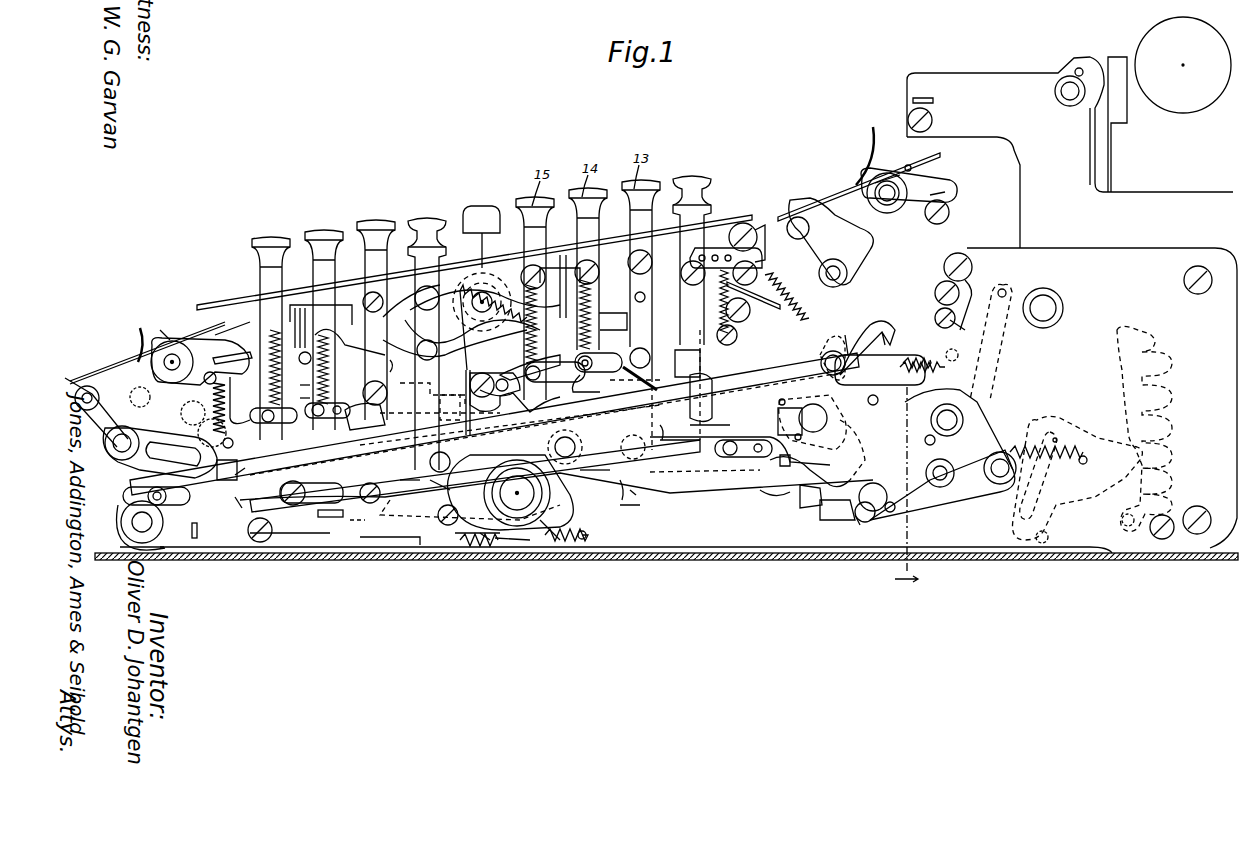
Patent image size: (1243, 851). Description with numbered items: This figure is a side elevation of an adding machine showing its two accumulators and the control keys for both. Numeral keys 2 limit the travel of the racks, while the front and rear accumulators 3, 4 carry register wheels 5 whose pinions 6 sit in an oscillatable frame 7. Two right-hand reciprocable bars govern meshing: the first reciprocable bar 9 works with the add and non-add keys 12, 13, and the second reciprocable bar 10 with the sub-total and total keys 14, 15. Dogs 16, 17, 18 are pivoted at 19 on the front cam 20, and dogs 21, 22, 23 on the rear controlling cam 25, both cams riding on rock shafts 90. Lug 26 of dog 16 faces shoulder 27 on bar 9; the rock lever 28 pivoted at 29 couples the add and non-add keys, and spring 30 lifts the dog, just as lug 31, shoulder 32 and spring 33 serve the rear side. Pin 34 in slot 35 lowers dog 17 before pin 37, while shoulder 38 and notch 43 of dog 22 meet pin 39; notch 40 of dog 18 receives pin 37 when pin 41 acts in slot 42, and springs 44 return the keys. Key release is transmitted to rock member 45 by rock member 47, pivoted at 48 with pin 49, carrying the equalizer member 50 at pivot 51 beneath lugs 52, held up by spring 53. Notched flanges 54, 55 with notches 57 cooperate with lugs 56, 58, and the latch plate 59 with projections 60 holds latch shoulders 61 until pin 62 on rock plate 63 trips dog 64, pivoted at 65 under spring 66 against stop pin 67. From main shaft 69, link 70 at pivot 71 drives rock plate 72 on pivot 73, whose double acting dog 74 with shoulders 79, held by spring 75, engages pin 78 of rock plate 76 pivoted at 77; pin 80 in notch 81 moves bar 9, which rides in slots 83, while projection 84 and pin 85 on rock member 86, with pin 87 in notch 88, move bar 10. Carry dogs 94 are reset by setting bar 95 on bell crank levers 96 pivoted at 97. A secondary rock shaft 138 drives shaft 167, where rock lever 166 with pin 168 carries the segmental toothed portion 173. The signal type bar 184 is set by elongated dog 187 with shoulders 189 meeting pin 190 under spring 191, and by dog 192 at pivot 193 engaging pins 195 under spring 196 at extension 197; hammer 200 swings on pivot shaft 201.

The numeral keys 2 is at (426, 222).
The accumulator 3 is at (110, 358).
The accumulator 4 is at (818, 195).
The register wheels 5 is at (868, 168).
The register wheel pinions 6 is at (906, 490).
The frame 7 is at (82, 395).
The first reciprocable bar 9 is at (766, 419).
The second reciprocable bar 10 is at (718, 472).
The add key 12 is at (430, 250).
The non-add key 13 is at (374, 229).
The sub-total key 14 is at (320, 239).
The total key 15 is at (268, 246).
The dog 16 is at (365, 416).
The dog 17 is at (327, 407).
The dog 18 is at (260, 464).
The pivot 19 is at (182, 532).
The cam 20 is at (122, 488).
The dog 21 is at (688, 378).
The dog 22 is at (733, 352).
The dog 23 is at (520, 401).
The controlling cam 25 is at (973, 303).
The lug 26 is at (228, 498).
The shoulder 27 is at (233, 505).
The rock lever 28 is at (437, 492).
The pivot 29 is at (411, 486).
The spring 30 is at (181, 415).
The lug 31 is at (735, 446).
The shoulder 32 is at (715, 426).
The spring 33 is at (723, 257).
The pin 34 is at (299, 383).
The slot 35 is at (387, 400).
The pin 37 is at (363, 525).
The shoulder 38 is at (670, 430).
The pin 39 is at (636, 488).
The notch 40 is at (430, 465).
The pin 41 is at (263, 400).
The slot 42 is at (299, 393).
The notch 43 is at (641, 496).
The springs 44 is at (262, 340).
The rock member 45 is at (396, 369).
The rock member 47 is at (365, 345).
The pivot 48 is at (486, 292).
The pin 49 is at (360, 352).
The equalizer member 50 is at (410, 285).
The pivot 51 is at (435, 290).
The lugs 52 is at (302, 300).
The spring 53 is at (525, 362).
The notched flange 54 is at (330, 518).
The notched flange 55 is at (598, 472).
The lugs 56 is at (382, 497).
The notches 57 is at (472, 515).
The lugs 58 is at (680, 441).
The latch plate 59 is at (272, 532).
The latching projections 60 is at (530, 426).
The latch shoulders 61 is at (474, 461).
The pin 62 is at (478, 518).
The rock plate 63 is at (548, 545).
The dog 64 is at (488, 545).
The pivot 65 is at (450, 540).
The spring 66 is at (500, 545).
The stop pin 67 is at (462, 548).
The main operating shaft 69 is at (490, 492).
The link 70 is at (770, 492).
The pivot 71 is at (563, 460).
The rock plate 72 is at (995, 432).
The pivot 73 is at (965, 420).
The double acting dog 74 is at (875, 509).
The tension spring 75 is at (925, 497).
The rock plate 76 is at (880, 380).
The pivot 77 is at (814, 421).
The pin 78 is at (810, 372).
The shoulders 79 is at (853, 452).
The pin 80 is at (832, 350).
The notch 81 is at (852, 336).
The slots 83 is at (121, 520).
The projection 84 is at (804, 496).
The pin 85 is at (863, 384).
The rock member 86 is at (787, 451).
The pin 87 is at (845, 526).
The notch 88 is at (825, 515).
The rock shafts 90 is at (138, 524).
The carry dogs 94 is at (222, 336).
The setting bar 95 is at (222, 330).
The bell crank levers 96 is at (195, 330).
The pivot 97 is at (174, 355).
The secondary rock shaft 138 is at (1046, 306).
The rock lever 166 is at (997, 352).
The shaft 167 is at (937, 424).
The pin 168 is at (974, 268).
The segmental toothed portion 173 is at (1160, 380).
The signal type bar 184 is at (1108, 156).
The elongated dog 187 is at (470, 395).
The shoulders 189 is at (450, 404).
The pin 190 is at (546, 369).
The coil tension spring 191 is at (790, 278).
The elongated dog 192 is at (755, 372).
The pivot 193 is at (960, 342).
The pins 195 is at (552, 352).
The coil tension spring 196 is at (945, 375).
The extension 197 is at (960, 355).
The hammer 200 is at (1012, 185).
The pivot shaft 201 is at (1068, 98).